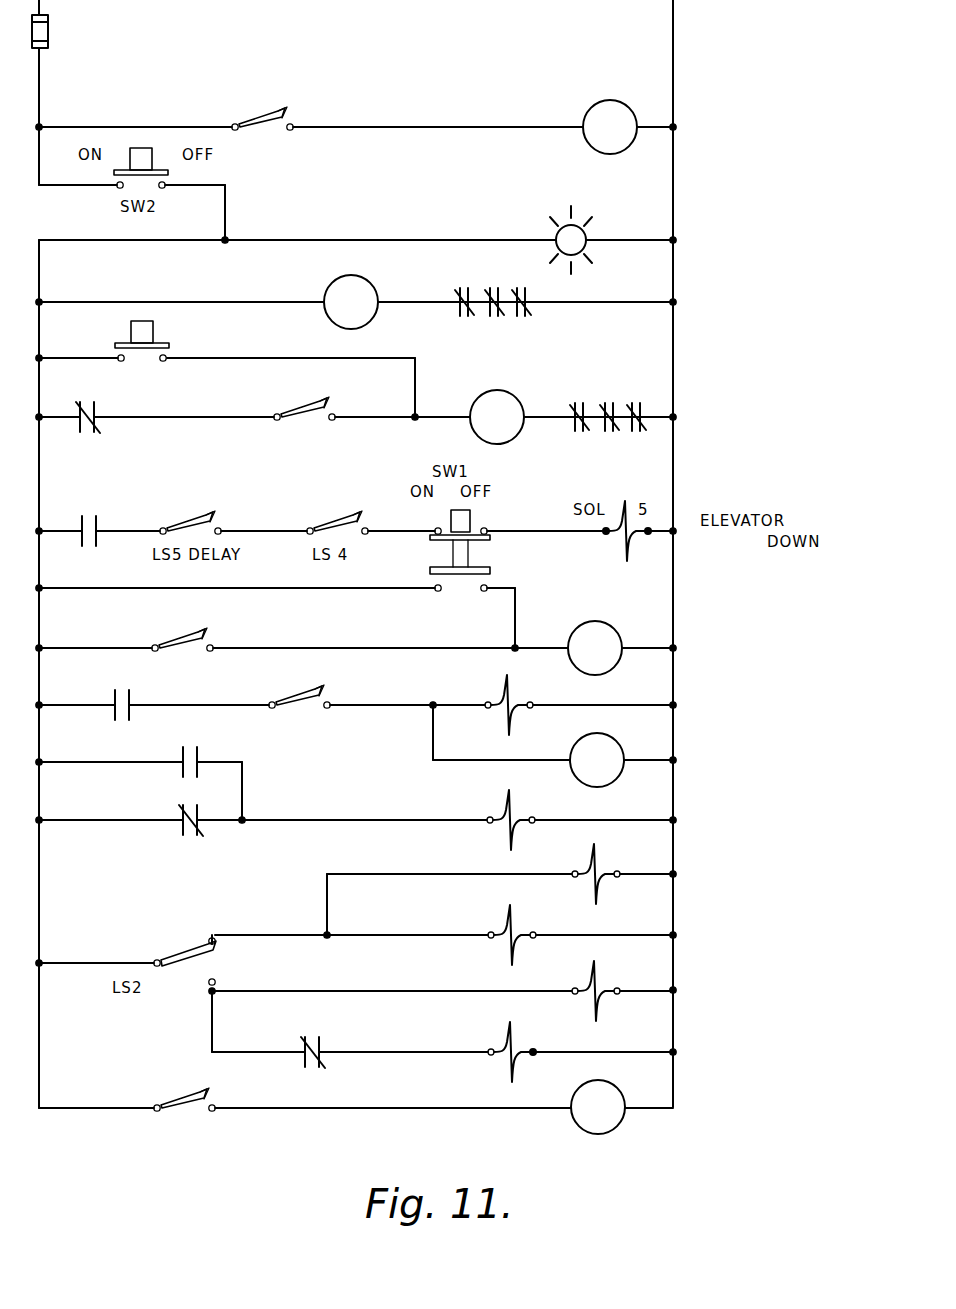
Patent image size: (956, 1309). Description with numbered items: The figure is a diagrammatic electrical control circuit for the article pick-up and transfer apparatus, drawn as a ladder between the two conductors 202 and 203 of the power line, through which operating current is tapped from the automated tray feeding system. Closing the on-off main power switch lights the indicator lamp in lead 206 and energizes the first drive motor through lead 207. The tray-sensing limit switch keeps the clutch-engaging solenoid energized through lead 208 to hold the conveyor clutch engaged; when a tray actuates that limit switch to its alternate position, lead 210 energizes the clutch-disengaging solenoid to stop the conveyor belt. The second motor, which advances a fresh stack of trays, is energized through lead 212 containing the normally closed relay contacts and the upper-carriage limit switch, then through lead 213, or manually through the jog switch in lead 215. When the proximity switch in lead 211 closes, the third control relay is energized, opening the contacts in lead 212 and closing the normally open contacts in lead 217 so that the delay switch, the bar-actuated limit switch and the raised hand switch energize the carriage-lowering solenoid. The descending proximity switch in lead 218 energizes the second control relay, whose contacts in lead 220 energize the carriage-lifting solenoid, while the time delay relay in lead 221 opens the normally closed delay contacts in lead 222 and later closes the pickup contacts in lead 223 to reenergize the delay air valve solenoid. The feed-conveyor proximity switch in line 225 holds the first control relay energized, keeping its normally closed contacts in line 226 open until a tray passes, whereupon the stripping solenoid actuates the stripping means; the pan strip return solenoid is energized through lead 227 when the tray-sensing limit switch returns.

The conductor 202 is at (44, 60).
The conductor 203 is at (676, 6).
The line 225 is at (465, 126).
The lead 206 is at (434, 236).
The lead 207 is at (280, 300).
The lead 215 is at (332, 362).
The lead 212 is at (64, 412).
The lead 213 is at (444, 424).
The lead 217 is at (64, 526).
The lead 218 is at (102, 650).
The lead 220 is at (52, 712).
The lead 223 is at (246, 768).
The lead 221 is at (430, 745).
The lead 222 is at (222, 826).
The lead 227 is at (472, 872).
The lead 208 is at (420, 926).
The lead 210 is at (362, 988).
The line 226 is at (432, 1044).
The lead 211 is at (118, 1106).